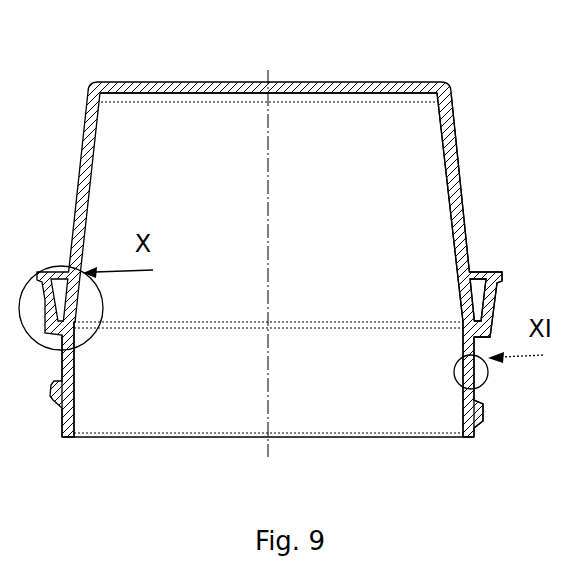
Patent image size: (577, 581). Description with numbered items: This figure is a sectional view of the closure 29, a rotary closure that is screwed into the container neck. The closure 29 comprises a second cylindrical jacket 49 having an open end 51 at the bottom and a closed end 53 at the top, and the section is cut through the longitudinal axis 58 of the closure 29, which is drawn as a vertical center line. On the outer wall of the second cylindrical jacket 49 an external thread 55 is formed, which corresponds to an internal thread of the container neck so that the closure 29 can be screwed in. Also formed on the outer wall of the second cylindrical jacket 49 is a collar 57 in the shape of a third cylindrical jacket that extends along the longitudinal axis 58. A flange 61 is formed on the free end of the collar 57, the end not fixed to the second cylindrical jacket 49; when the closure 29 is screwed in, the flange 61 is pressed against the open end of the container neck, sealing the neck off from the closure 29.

The closure 29 is at (470, 120).
The second cylindrical jacket 49 is at (453, 178).
The open end 51 is at (207, 460).
The closed end 53 is at (176, 70).
The external thread 55 is at (480, 405).
The collar 57 is at (488, 298).
The longitudinal axis 58 is at (268, 388).
The flange 61 is at (498, 279).